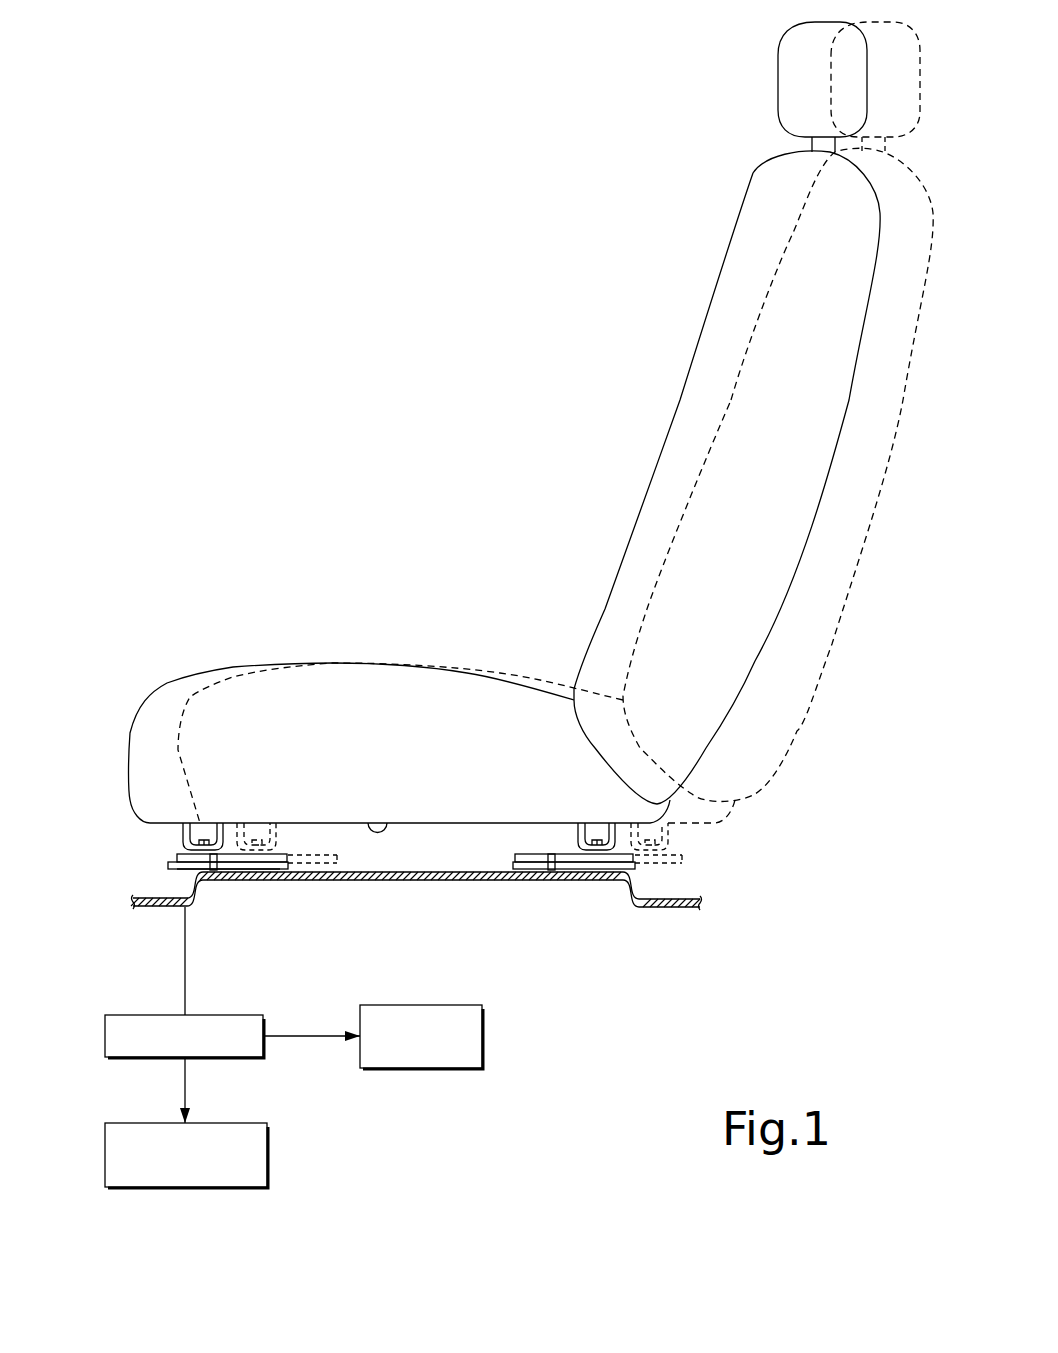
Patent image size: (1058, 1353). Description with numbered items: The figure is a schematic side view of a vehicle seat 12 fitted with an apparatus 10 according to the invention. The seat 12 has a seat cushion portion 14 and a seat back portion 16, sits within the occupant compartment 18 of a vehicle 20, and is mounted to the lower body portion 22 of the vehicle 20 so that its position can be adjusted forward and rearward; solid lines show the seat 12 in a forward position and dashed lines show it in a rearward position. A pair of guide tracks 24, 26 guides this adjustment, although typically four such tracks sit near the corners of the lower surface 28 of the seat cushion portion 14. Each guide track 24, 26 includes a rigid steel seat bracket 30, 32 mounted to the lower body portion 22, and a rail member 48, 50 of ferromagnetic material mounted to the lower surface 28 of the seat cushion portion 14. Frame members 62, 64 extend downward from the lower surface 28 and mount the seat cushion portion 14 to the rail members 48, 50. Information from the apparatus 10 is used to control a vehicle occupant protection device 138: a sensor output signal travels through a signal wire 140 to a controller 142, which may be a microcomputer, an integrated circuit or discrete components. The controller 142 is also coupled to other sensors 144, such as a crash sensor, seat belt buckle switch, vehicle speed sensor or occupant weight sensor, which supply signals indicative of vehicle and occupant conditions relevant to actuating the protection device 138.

The apparatus 10 is at (137, 840).
The vehicle seat 12 is at (688, 233).
The seat cushion portion 14 is at (363, 680).
The seat back portion 16 is at (708, 355).
The occupant compartment 18 is at (523, 277).
The vehicle 20 is at (140, 927).
The lower body portion 22 is at (660, 907).
The guide track 24 is at (163, 860).
The guide track 26 is at (690, 862).
The lower surface 28 is at (385, 822).
The seat bracket 30 is at (253, 870).
The seat bracket 32 is at (555, 872).
The rail member 48 is at (275, 855).
The rail member 50 is at (540, 852).
The frame member 62 is at (183, 835).
The frame member 64 is at (580, 837).
The vehicle occupant protection device 138 is at (257, 1127).
The signal wire 140 is at (185, 947).
The controller 142 is at (250, 1022).
The other sensors 144 is at (467, 1013).